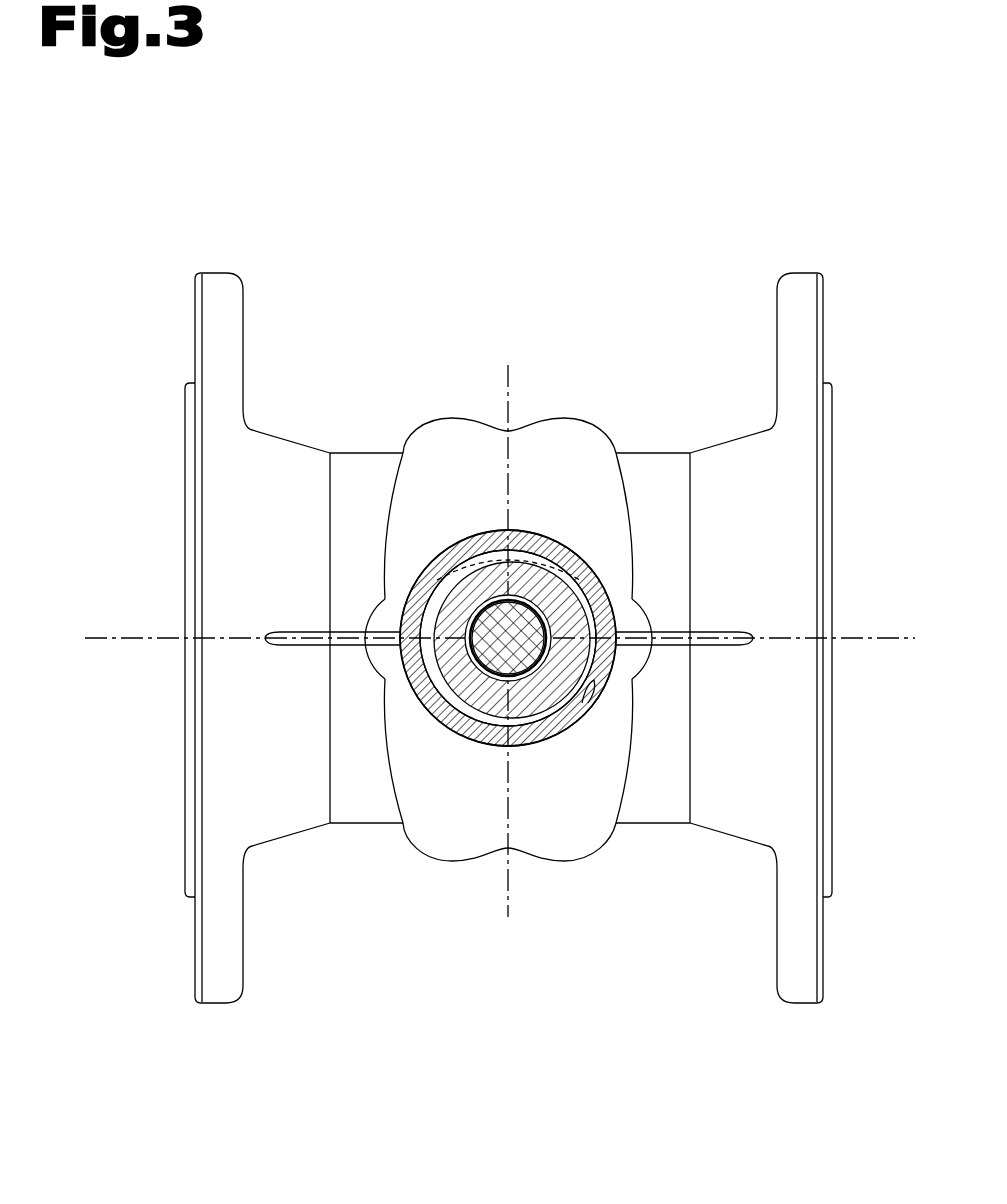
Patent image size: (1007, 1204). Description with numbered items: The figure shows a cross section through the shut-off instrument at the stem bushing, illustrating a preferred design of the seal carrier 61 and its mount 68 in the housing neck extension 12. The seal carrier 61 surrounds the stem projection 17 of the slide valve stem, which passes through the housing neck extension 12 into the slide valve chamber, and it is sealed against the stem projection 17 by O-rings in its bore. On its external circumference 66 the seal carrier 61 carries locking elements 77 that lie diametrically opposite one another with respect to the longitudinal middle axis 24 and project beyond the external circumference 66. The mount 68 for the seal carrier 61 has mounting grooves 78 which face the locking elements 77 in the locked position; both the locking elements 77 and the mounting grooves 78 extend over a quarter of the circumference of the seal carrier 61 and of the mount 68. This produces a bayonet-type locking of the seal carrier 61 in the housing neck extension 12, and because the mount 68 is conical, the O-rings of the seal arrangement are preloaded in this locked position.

The housing neck extension 12 is at (438, 543).
The stem projection 17 is at (469, 712).
The longitudinal middle axis 24 is at (612, 590).
The seal carrier 61 is at (550, 710).
The external circumference 66 is at (541, 542).
The mount 68 is at (597, 695).
The locking elements 77 is at (563, 562).
The mounting grooves 78 is at (497, 527).